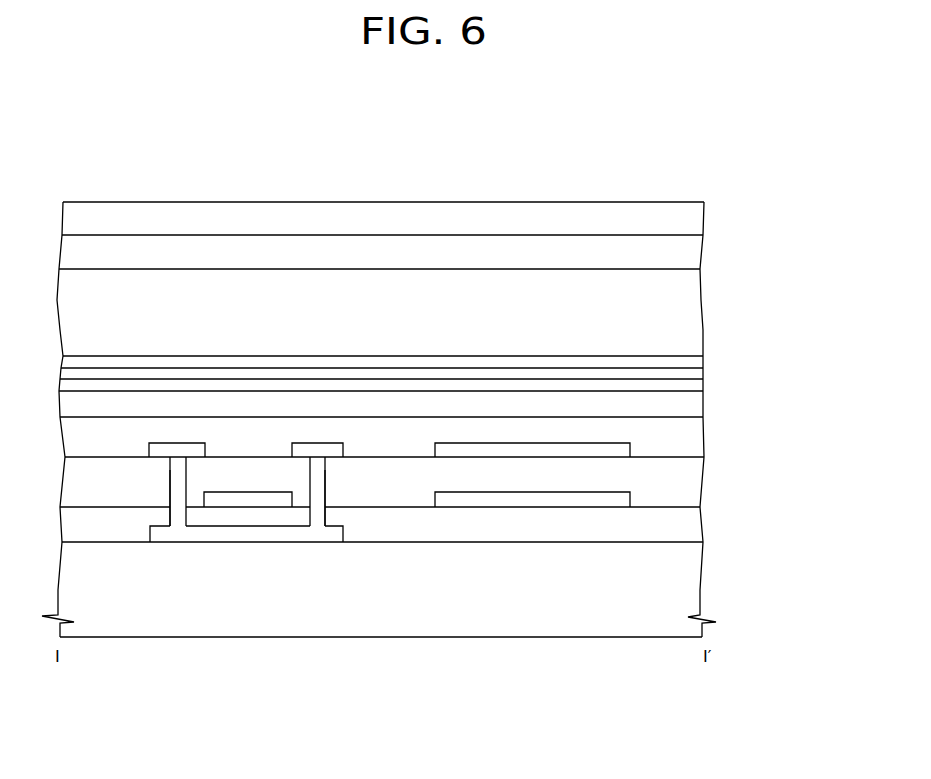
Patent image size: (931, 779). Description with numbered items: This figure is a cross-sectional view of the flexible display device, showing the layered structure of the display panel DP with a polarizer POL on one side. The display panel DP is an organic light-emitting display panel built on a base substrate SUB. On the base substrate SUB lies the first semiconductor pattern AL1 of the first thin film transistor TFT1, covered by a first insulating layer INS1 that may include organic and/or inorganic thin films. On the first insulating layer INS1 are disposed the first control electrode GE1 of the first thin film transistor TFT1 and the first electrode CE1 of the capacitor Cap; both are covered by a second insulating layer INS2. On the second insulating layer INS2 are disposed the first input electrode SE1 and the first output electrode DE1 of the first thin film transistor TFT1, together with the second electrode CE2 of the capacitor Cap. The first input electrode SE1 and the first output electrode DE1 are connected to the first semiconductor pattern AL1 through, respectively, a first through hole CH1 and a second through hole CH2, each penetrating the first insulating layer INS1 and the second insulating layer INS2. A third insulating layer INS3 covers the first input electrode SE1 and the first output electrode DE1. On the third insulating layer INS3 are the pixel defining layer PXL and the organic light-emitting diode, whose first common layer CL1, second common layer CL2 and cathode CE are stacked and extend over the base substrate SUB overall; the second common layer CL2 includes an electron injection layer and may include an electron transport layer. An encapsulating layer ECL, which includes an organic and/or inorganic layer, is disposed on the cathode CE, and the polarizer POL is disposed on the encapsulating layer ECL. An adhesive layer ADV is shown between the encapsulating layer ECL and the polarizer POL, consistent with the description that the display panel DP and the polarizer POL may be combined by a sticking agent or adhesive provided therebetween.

The polarizer POL is at (691, 221).
The adhesive layer ADV is at (691, 251).
The encapsulating layer ECL is at (691, 311).
The cathode CE is at (692, 360).
The second common layer CL2 is at (690, 372).
The first common layer CL1 is at (690, 383).
The pixel defining layer PXL is at (690, 402).
The third insulating layer INS3 is at (692, 438).
The second insulating layer INS2 is at (692, 483).
The first insulating layer INS1 is at (692, 523).
The base substrate SUB is at (692, 577).
The display panel DP is at (784, 303).
The first through hole CH1 is at (172, 483).
The first input electrode SE1 is at (193, 450).
The first control electrode GE1 is at (240, 500).
The first semiconductor pattern AL1 is at (265, 535).
The first output electrode DE1 is at (303, 450).
The second through hole CH2 is at (325, 483).
The first electrode of the capacitor CE1 is at (485, 500).
The second electrode of the capacitor CE2 is at (570, 450).
The first thin film transistor TFT1 is at (157, 703).
The capacitor Cap is at (465, 703).